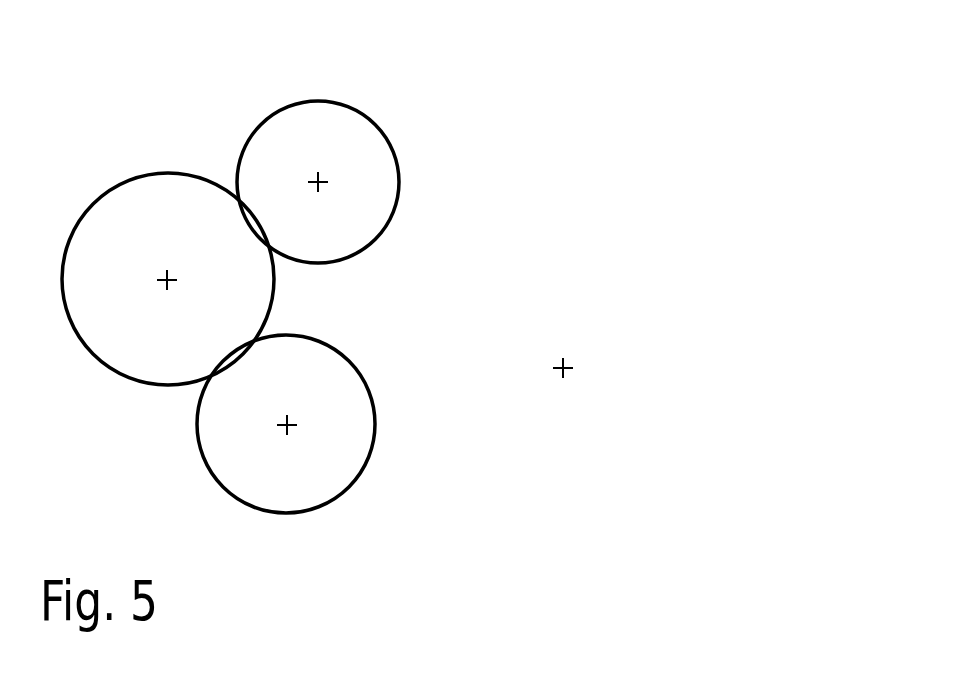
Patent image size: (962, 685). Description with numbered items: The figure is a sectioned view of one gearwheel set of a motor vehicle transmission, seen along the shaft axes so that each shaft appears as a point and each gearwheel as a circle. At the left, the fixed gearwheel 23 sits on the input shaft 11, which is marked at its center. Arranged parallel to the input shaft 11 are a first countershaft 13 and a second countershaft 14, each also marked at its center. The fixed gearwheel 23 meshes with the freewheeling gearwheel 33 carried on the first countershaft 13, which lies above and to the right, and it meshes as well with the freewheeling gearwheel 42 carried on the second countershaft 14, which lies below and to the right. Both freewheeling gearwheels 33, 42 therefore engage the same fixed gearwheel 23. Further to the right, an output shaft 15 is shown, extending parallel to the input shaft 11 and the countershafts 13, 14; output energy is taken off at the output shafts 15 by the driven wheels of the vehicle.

The fixed gearwheel 23 is at (133, 202).
The input shaft 11 is at (165, 278).
The freewheeling gearwheel 33 is at (305, 118).
The first countershaft 13 is at (322, 179).
The freewheeling gearwheel 42 is at (272, 488).
The second countershaft 14 is at (291, 420).
The output shaft 15 is at (567, 364).